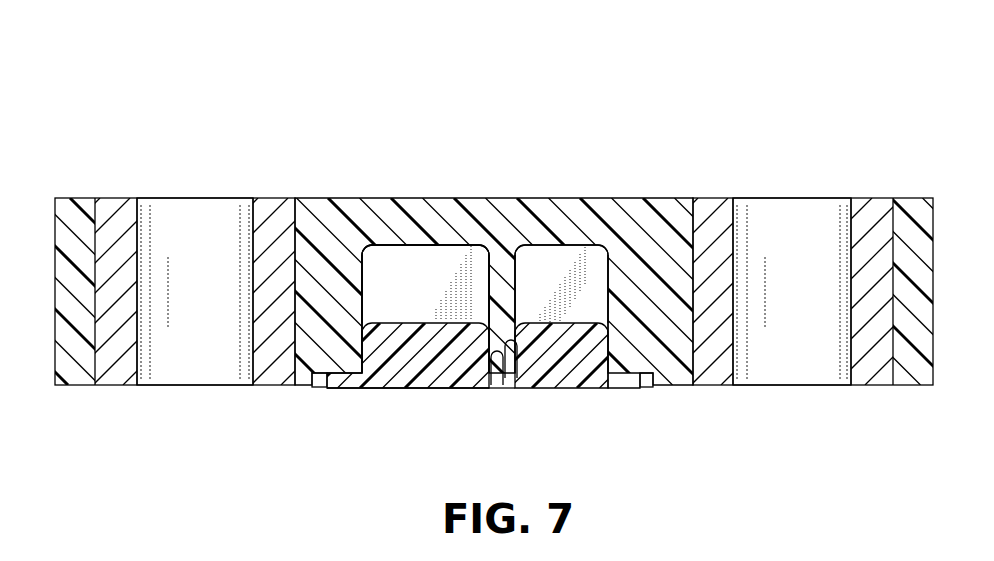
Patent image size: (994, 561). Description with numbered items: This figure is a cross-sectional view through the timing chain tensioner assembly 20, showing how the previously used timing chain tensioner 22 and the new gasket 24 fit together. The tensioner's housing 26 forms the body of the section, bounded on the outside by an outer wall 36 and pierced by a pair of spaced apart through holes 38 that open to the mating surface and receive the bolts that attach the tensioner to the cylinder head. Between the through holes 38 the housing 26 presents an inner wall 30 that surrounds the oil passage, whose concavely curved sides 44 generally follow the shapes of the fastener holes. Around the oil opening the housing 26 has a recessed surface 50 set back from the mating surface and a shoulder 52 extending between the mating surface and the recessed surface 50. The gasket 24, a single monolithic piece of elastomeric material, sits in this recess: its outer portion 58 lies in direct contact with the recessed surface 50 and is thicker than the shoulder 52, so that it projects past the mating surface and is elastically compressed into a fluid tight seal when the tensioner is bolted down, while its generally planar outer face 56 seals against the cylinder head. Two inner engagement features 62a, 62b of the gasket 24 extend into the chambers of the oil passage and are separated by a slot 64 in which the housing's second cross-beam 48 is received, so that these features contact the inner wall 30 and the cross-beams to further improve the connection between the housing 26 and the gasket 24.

The timing chain tensioner assembly 20 is at (692, 107).
The timing chain tensioner 22 is at (50, 360).
The gasket 24 is at (380, 388).
The housing 26 is at (317, 213).
The inner wall 30 is at (365, 287).
The outer wall 36 is at (933, 345).
The through holes 38 is at (203, 365).
The concavely curved sides 44 is at (607, 300).
The second cross-beam 48 is at (537, 389).
The recessed surface 50 is at (323, 387).
The shoulder 52 is at (645, 389).
The outer face 56 is at (430, 389).
The outer portion 58 is at (622, 389).
The inner engagement feature 62a is at (455, 330).
The inner engagement feature 62b is at (566, 325).
The slot 64 is at (503, 388).